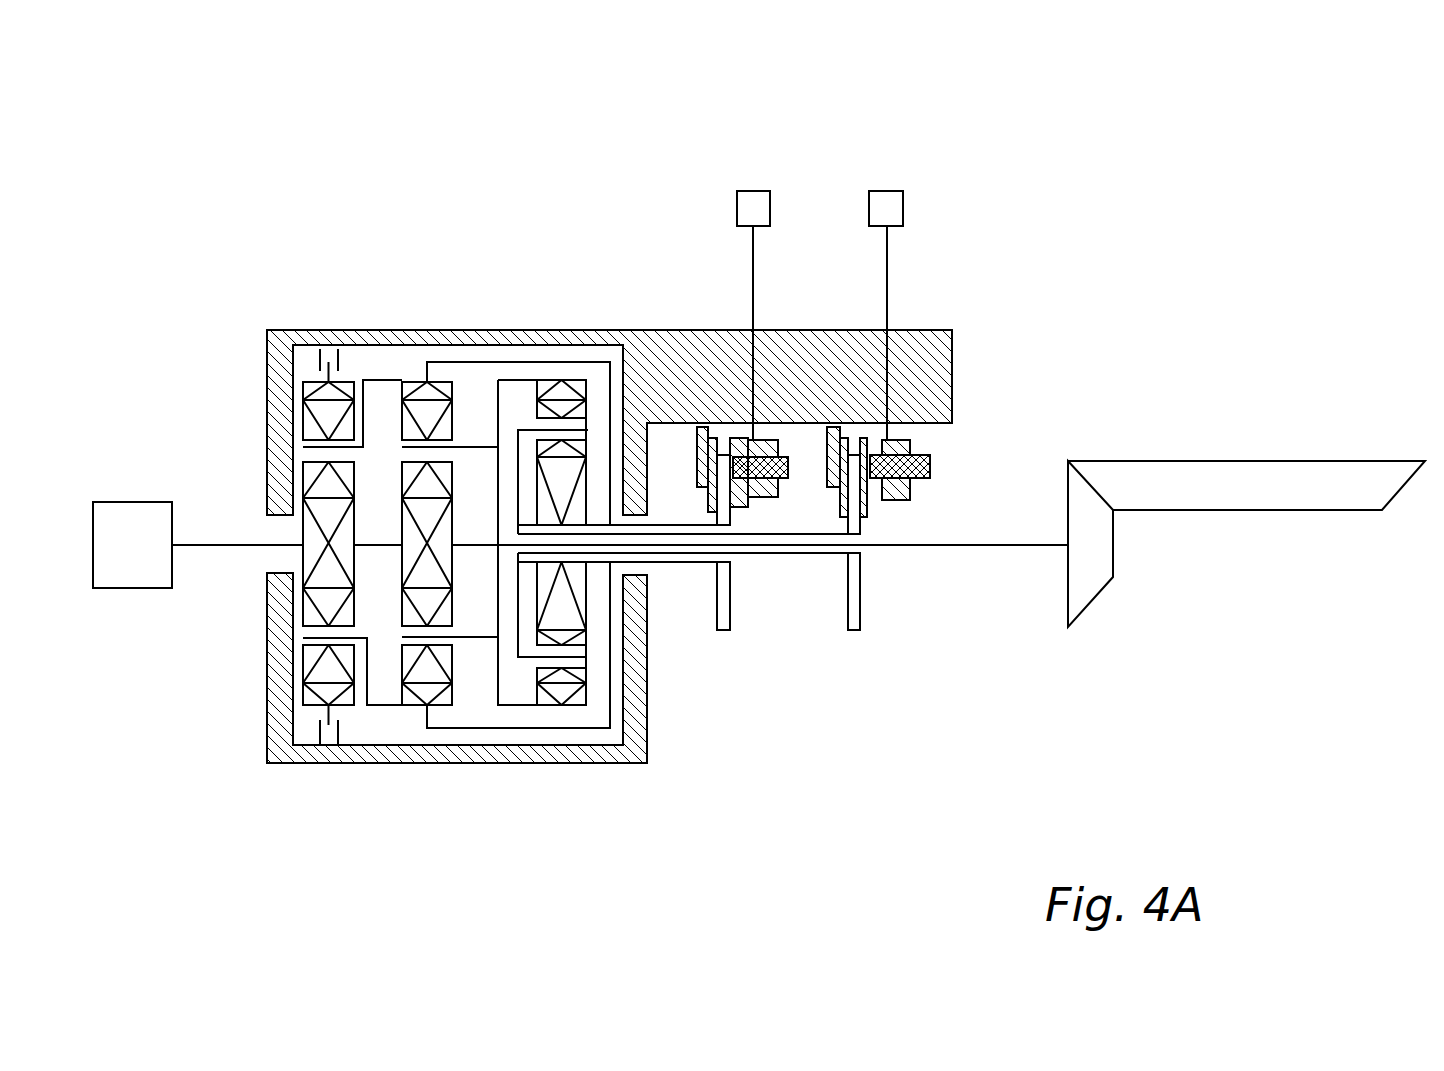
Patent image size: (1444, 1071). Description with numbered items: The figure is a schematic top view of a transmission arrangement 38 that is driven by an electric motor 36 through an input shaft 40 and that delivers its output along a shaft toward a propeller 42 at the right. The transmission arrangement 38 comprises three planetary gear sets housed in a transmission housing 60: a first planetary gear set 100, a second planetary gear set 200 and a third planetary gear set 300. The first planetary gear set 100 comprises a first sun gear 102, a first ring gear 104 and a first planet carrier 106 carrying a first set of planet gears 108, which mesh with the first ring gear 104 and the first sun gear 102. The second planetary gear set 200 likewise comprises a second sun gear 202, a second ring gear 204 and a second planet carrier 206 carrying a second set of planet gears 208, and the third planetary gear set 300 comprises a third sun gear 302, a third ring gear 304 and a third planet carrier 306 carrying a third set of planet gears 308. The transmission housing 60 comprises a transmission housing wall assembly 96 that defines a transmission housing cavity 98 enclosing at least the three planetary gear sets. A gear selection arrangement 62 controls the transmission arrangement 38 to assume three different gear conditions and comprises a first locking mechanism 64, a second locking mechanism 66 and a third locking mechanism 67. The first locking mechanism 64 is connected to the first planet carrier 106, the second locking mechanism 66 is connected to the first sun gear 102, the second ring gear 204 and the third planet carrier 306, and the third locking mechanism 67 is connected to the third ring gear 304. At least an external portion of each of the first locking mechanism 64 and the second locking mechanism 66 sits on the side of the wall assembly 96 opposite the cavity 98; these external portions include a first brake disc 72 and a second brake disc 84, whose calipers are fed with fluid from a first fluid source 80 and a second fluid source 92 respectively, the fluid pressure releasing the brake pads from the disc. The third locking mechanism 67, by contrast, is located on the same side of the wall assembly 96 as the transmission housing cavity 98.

The electric motor 36 is at (115, 502).
The transmission arrangement 38 is at (442, 265).
The input shaft 40 is at (183, 546).
The propeller 42 is at (945, 548).
The transmission housing 60 is at (665, 328).
The gear selection arrangement 62 is at (972, 448).
The first locking mechanism 64 is at (816, 440).
The second locking mechanism 66 is at (683, 440).
The third locking mechanism 67 is at (318, 362).
The first brake disc 72 is at (863, 598).
The first fluid source 80 is at (887, 191).
The second brake disc 84 is at (730, 600).
The second fluid source 92 is at (753, 191).
The transmission housing wall assembly 96 is at (522, 765).
The transmission housing cavity 98 is at (402, 725).
The first planetary gear set 100 is at (561, 722).
The first sun gear 102 is at (563, 598).
The first ring gear 104 is at (573, 382).
The first planet carrier 106 is at (583, 658).
The first set of planet gears 108 is at (563, 677).
The second planetary gear set 200 is at (440, 742).
The second sun gear 202 is at (440, 537).
The second ring gear 204 is at (413, 382).
The second planet carrier 206 is at (423, 453).
The second set of planet gears 208 is at (420, 665).
The third planetary gear set 300 is at (305, 720).
The third sun gear 302 is at (328, 577).
The third ring gear 304 is at (310, 382).
The third planet carrier 306 is at (307, 638).
The third set of planet gears 308 is at (327, 670).